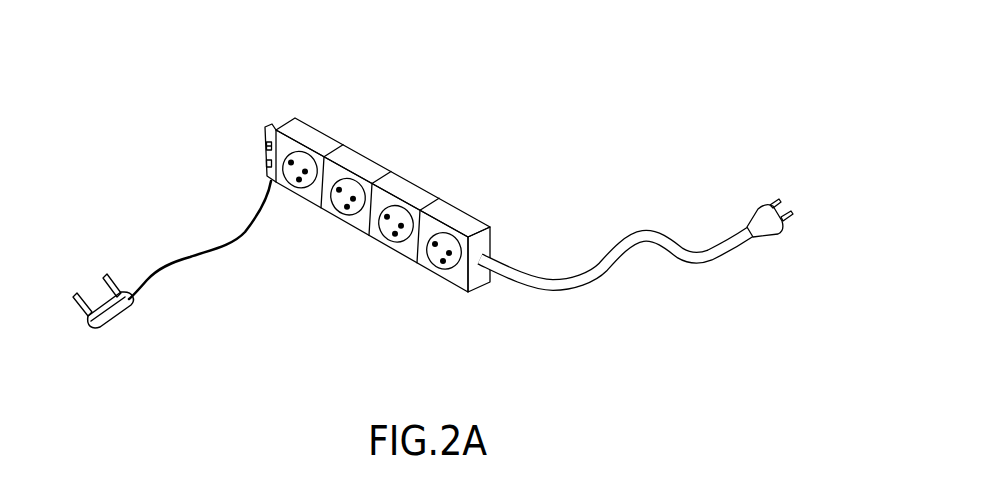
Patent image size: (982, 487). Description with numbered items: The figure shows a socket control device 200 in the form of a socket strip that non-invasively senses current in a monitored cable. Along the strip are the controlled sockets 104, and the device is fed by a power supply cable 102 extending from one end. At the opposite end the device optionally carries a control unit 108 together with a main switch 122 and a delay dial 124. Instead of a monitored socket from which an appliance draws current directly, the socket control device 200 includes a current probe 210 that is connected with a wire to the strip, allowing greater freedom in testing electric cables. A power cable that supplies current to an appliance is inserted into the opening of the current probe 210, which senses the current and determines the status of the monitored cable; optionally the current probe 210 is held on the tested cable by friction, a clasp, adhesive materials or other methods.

The socket control device 200 is at (542, 73).
The controlled sockets 104 is at (328, 136).
The control unit 108 is at (266, 119).
The main switch 122 is at (265, 145).
The delay dial 124 is at (265, 164).
The power supply cable 102 is at (640, 232).
The current probe 210 is at (100, 305).